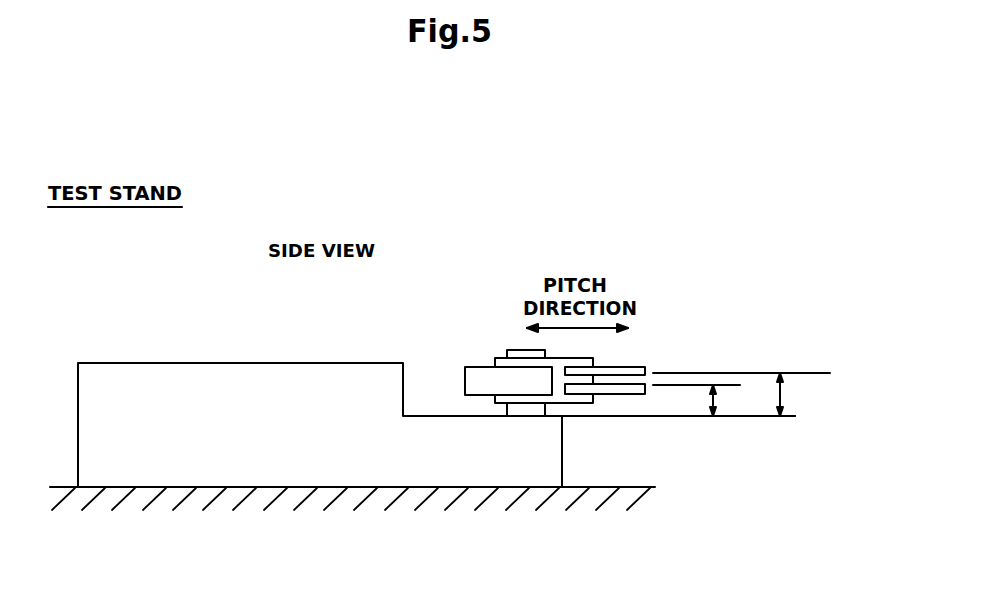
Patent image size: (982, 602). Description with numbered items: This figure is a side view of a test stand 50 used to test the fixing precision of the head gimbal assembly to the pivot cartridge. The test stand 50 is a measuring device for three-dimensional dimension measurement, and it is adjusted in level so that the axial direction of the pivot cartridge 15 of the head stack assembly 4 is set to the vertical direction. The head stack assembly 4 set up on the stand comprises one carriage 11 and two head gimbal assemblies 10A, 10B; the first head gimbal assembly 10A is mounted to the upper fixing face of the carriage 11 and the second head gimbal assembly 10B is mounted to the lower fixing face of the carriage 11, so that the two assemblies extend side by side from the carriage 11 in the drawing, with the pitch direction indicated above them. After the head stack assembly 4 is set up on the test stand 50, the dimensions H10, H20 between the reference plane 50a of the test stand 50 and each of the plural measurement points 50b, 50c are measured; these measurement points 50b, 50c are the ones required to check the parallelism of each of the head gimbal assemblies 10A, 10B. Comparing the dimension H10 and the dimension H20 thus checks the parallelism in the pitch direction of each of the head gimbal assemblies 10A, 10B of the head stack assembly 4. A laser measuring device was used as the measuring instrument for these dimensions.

The test stand 50 is at (176, 363).
The head stack assembly 4 is at (470, 359).
The pivot cartridge 15 is at (518, 350).
The carriage 11 is at (465, 382).
The first head gimbal assembly 10A is at (622, 367).
The second head gimbal assembly 10B is at (623, 395).
The reference plane 50a is at (760, 408).
The measurement point 50b is at (817, 381).
The measurement point 50c is at (682, 394).
The dimension H10 is at (783, 392).
The dimension H20 is at (717, 402).